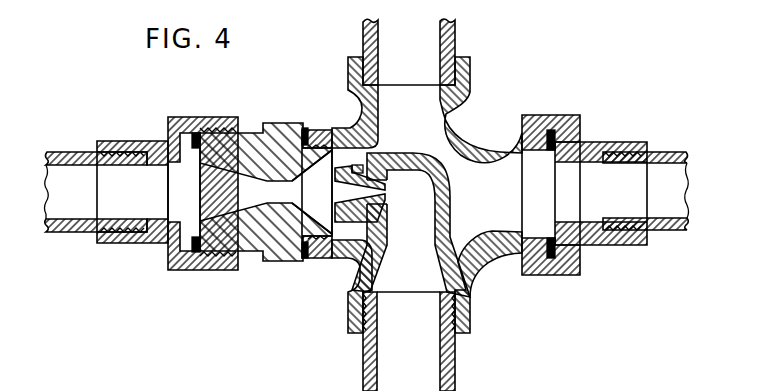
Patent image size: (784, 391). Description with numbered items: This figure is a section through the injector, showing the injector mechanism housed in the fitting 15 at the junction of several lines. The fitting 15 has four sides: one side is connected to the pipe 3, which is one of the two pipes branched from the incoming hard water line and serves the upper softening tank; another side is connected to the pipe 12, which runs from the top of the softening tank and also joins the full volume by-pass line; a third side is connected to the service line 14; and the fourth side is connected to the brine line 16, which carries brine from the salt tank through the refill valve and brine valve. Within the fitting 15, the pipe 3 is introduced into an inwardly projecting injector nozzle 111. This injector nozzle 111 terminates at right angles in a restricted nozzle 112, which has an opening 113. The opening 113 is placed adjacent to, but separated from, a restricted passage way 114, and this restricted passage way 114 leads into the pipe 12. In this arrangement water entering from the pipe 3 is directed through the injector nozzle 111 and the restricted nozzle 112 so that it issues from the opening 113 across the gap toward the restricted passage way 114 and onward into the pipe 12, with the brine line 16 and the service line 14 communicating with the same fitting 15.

The upper softening tank pipe 3 is at (455, 373).
The pipe 12 is at (52, 152).
The service line 14 is at (667, 150).
The fitting 15 is at (358, 104).
The brine line 16 is at (456, 42).
The injector nozzle 111 is at (450, 202).
The restricted nozzle 112 is at (362, 186).
The opening 113 is at (332, 193).
The restricted passage way 114 is at (275, 193).